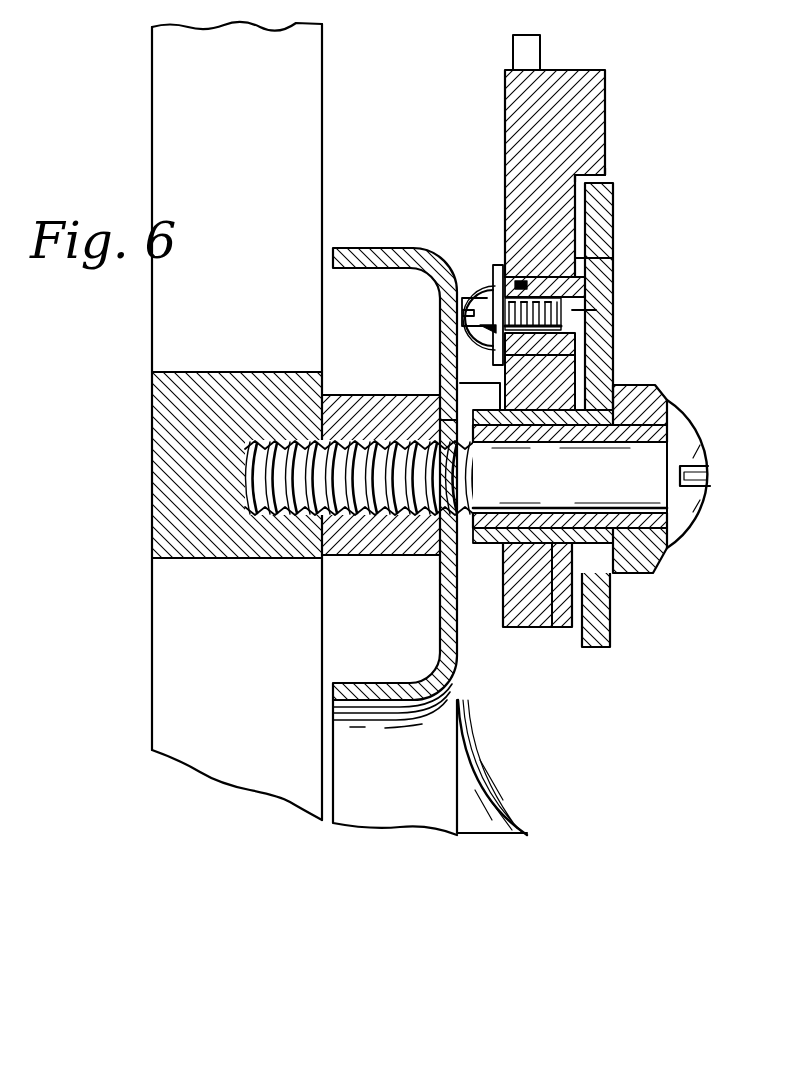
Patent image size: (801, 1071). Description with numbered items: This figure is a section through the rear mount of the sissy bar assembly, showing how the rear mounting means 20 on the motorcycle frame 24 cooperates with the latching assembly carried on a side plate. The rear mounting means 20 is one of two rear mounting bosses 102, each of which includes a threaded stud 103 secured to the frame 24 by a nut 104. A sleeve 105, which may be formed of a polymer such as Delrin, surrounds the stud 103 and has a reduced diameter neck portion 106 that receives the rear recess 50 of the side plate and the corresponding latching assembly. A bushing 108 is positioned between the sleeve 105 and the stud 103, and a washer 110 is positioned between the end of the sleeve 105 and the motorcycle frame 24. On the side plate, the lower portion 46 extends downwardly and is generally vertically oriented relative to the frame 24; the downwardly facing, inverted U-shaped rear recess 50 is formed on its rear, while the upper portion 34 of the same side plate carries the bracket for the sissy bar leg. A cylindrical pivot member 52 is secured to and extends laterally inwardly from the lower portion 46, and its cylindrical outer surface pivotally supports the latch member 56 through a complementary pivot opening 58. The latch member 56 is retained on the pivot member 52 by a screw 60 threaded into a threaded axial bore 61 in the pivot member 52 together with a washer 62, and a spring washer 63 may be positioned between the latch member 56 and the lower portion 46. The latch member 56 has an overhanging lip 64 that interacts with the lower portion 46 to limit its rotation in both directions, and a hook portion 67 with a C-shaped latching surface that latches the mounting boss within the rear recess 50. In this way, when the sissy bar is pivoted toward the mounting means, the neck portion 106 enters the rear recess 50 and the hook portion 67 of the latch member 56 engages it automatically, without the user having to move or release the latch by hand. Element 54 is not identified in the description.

The rear mounting means 20 is at (480, 152).
The motorcycle frame 24 is at (390, 252).
The upper portion 34 is at (541, 48).
The lower portion 46 is at (616, 220).
The rear recess 50 is at (602, 514).
The pivot member 52 is at (586, 355).
The spring 54 is at (578, 310).
The latch member 56 is at (600, 92).
The pivot opening 58 is at (522, 283).
The screw 60 is at (458, 300).
The threaded axial bore 61 is at (487, 327).
The washer 62 is at (490, 268).
The spring washer 63 is at (616, 258).
The overhanging lip 64 is at (607, 180).
The hook portion 67 is at (526, 618).
The rear mounting boss 102 is at (609, 476).
The threaded stud 103 is at (681, 441).
The nut 104 is at (354, 542).
The sleeve 105 is at (622, 408).
The neck portion 106 is at (550, 620).
The bushing 108 is at (656, 576).
The washer 110 is at (452, 596).